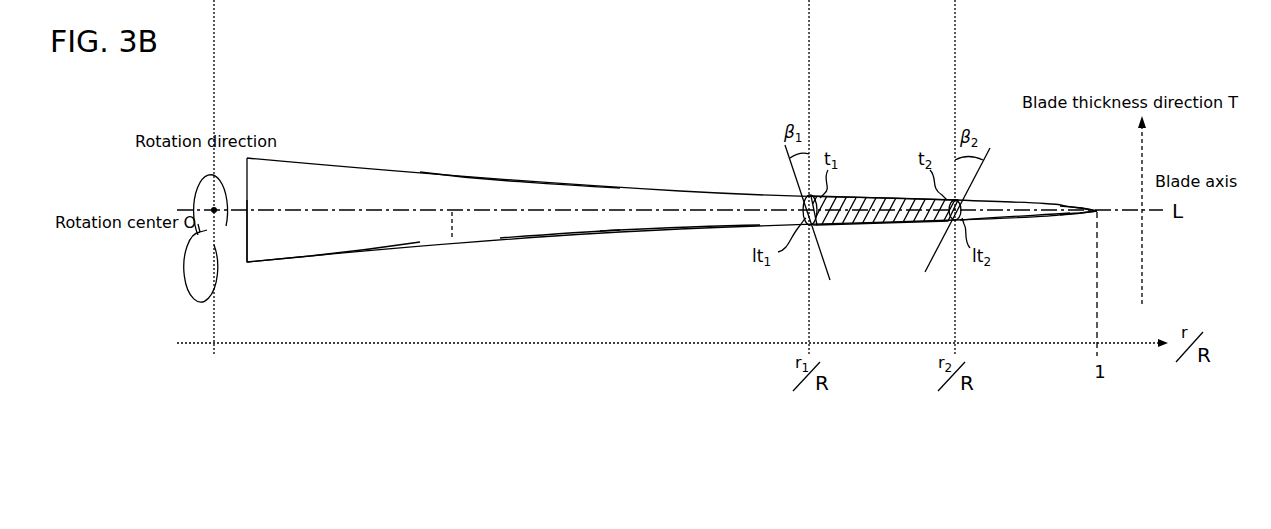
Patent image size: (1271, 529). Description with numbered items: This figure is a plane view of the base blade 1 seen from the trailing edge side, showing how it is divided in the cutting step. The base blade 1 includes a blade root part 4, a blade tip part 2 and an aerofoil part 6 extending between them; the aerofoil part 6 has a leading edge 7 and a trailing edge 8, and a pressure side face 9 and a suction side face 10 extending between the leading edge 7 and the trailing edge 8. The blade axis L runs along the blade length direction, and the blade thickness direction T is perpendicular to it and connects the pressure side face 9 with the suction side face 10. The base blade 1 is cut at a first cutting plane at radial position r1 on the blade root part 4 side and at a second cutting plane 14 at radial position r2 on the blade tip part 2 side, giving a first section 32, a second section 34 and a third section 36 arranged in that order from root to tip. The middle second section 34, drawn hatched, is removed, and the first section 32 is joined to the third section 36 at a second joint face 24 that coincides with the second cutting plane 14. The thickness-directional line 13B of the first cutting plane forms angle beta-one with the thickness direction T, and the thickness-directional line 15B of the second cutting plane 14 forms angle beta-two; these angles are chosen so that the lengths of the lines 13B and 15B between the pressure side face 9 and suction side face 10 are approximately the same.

The base blade 1 is at (406, 130).
The blade tip part 2 is at (1102, 214).
The blade root part 4 is at (258, 247).
The aerofoil part 6 is at (378, 240).
The leading edge 7 is at (465, 212).
The trailing edge 8 is at (452, 230).
The pressure side face 9 is at (558, 183).
The suction side face 10 is at (551, 236).
The thickness-directional line of the first cutting plane 13B is at (812, 238).
The second cutting plane 14 is at (832, 228).
The thickness-directional line of the second cutting plane 15B is at (972, 186).
The second joint face 24 is at (933, 228).
The first section 32 is at (660, 222).
The second section 34 is at (877, 222).
The third section 36 is at (1020, 222).